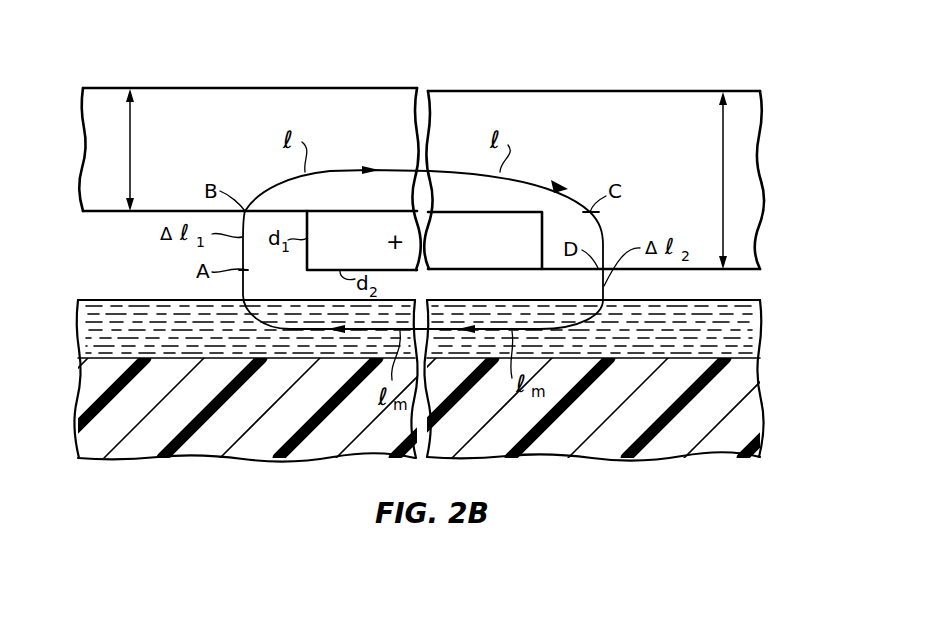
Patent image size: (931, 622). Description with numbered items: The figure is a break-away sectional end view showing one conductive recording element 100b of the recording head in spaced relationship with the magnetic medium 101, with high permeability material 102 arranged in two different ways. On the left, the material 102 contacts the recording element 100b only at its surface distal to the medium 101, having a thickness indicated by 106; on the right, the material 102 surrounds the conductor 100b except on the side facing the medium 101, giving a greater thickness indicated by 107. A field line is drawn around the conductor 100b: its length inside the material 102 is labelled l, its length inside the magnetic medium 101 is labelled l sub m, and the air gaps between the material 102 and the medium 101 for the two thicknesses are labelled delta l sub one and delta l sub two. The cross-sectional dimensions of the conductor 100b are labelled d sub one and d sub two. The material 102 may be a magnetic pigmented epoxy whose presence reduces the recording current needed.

The high permeability material 102 is at (167, 105).
The conductive recording element 100b is at (311, 253).
The thickness of material 106 is at (130, 133).
The greater thickness of material 107 is at (723, 155).
The magnetic medium 101 is at (745, 330).